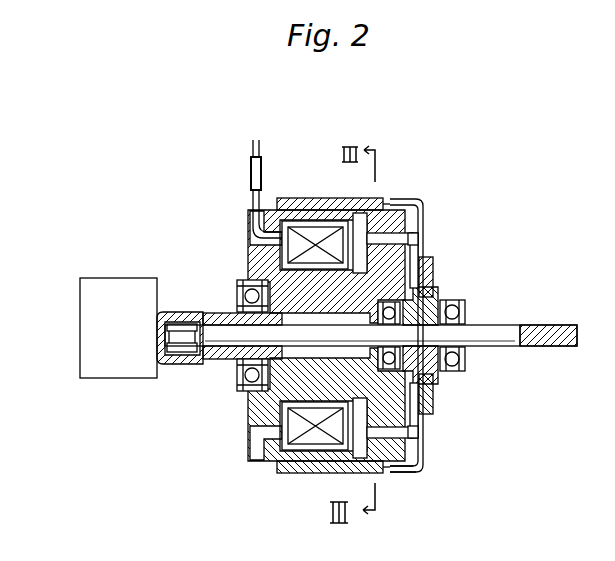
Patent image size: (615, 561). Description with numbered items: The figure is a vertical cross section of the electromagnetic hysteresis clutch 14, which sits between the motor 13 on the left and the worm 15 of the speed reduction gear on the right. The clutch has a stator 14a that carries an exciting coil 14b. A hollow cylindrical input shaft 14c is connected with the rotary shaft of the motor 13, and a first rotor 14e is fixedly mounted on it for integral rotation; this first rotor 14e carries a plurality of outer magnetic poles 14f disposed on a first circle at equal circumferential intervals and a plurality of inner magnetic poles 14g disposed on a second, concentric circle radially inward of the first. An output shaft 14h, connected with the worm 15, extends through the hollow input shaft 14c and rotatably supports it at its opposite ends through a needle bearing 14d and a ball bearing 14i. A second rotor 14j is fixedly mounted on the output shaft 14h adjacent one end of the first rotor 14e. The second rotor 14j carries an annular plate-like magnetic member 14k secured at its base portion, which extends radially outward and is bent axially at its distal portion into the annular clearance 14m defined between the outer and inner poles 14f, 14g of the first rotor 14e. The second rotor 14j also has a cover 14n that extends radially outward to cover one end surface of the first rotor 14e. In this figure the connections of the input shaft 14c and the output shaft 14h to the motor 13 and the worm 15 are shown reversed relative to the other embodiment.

The motor 13 is at (132, 278).
The electromagnetic hysteresis clutch 14 is at (498, 194).
The stator 14a is at (253, 440).
The exciting coil 14b is at (293, 418).
The input shaft 14c is at (158, 315).
The needle bearing 14d is at (192, 352).
The first rotor 14e is at (296, 203).
The outer magnetic poles 14f is at (410, 207).
The inner magnetic poles 14g is at (420, 417).
The output shaft 14h is at (520, 325).
The ball bearing 14i is at (417, 300).
The second rotor 14j is at (427, 260).
The magnetic member 14k is at (420, 442).
The annular clearance 14m is at (413, 427).
The cover 14n is at (420, 468).
The worm 15 is at (577, 346).